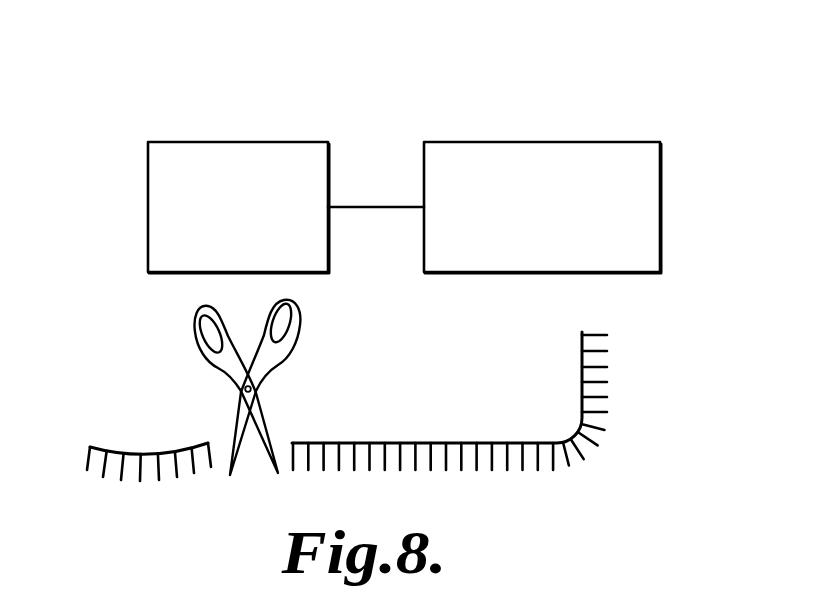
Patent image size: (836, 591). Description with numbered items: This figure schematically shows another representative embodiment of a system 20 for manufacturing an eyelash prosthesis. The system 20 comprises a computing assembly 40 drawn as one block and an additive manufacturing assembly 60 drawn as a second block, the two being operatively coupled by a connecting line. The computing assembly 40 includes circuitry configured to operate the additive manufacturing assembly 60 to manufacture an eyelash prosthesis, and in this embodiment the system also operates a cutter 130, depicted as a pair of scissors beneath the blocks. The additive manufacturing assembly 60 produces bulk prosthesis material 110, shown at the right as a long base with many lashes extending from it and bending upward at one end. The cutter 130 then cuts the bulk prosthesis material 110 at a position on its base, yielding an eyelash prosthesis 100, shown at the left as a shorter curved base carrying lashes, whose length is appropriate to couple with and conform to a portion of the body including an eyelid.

The system 20 is at (478, 64).
The computing assembly 40 is at (148, 197).
The additive manufacturing assembly 60 is at (662, 202).
The eyelash prosthesis 100 is at (116, 464).
The bulk prosthesis material 110 is at (497, 384).
The cutter 130 is at (243, 392).